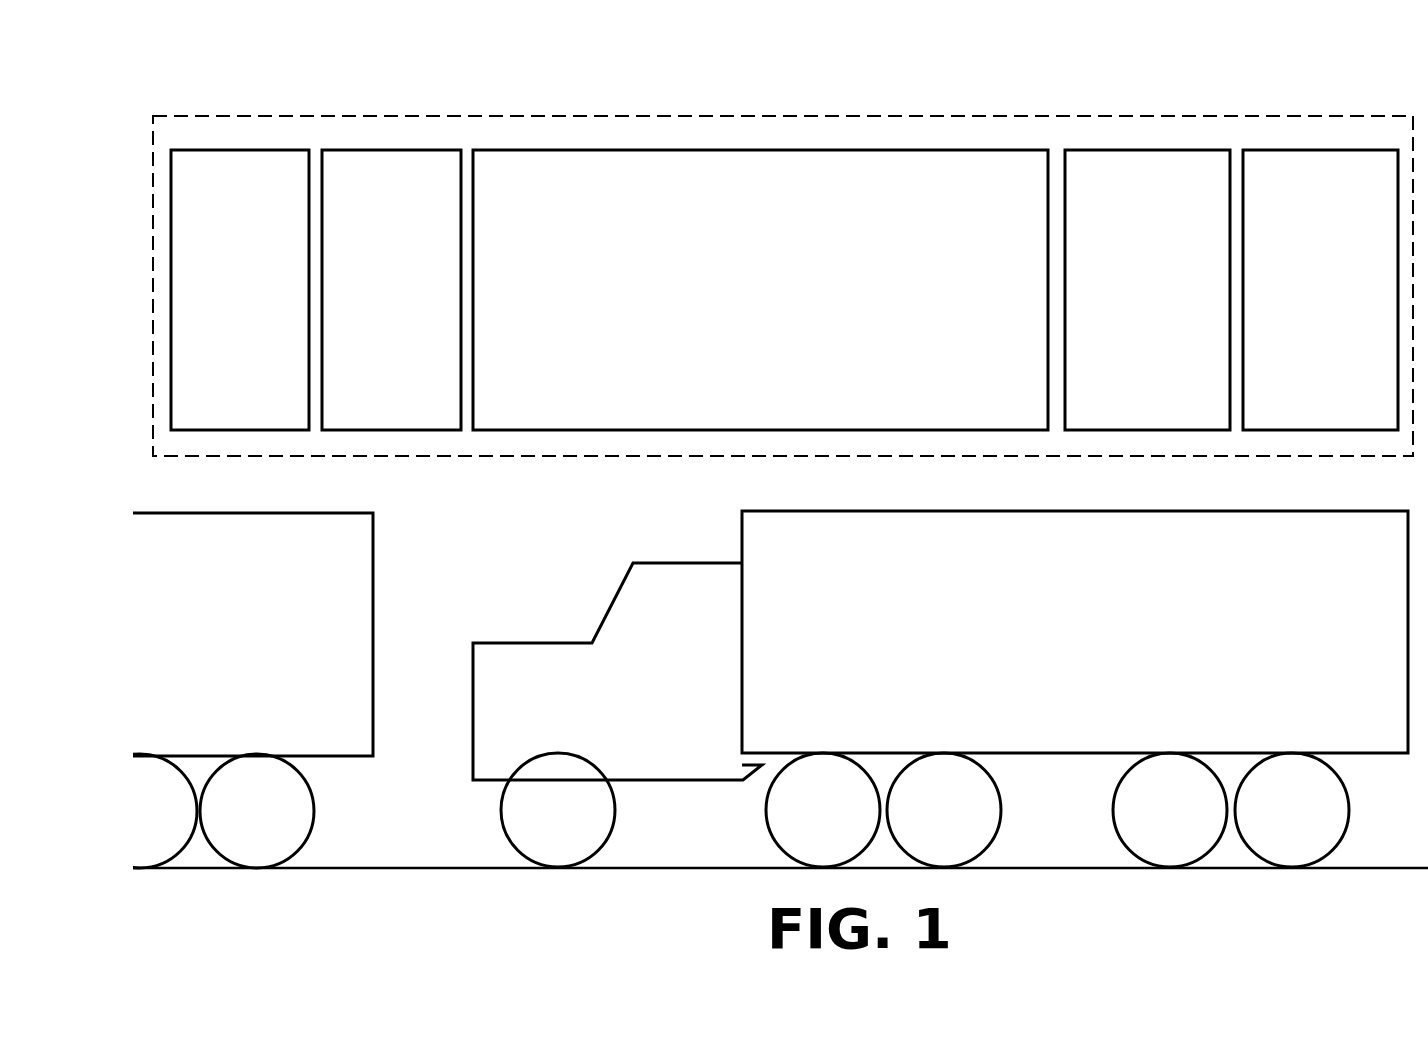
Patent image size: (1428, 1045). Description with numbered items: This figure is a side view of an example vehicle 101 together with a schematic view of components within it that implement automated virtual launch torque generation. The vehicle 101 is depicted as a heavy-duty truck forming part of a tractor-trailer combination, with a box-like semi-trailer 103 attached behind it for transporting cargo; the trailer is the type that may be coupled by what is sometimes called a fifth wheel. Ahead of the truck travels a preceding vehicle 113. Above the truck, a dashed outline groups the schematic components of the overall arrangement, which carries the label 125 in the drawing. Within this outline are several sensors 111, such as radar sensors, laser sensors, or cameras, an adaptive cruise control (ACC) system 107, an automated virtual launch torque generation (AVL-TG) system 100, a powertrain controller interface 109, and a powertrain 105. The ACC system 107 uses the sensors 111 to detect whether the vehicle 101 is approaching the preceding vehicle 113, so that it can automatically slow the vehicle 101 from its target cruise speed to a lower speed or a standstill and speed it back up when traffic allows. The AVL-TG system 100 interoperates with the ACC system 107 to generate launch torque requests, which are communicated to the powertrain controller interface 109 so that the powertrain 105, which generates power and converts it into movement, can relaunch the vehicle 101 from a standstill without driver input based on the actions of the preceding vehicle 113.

The vehicle control system 125 is at (1410, 70).
The sensors 111 is at (221, 313).
The adaptive cruise control (ACC) system 107 is at (372, 313).
The automated virtual launch torque generation (AVL-TG) system 100 is at (969, 314).
The powertrain controller interface 109 is at (1128, 341).
The powertrain 105 is at (1301, 313).
The vehicle 101 is at (677, 456).
The semi-trailer 103 is at (1049, 643).
The preceding vehicle 113 is at (398, 524).